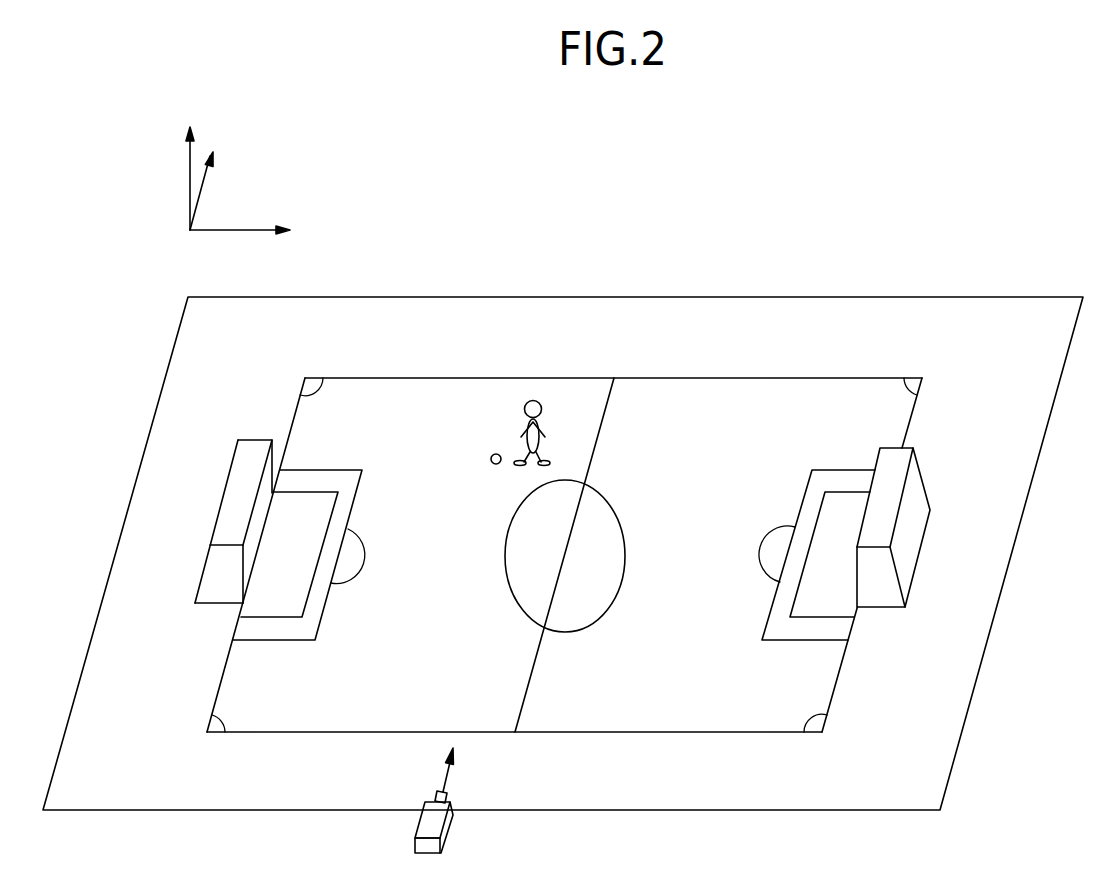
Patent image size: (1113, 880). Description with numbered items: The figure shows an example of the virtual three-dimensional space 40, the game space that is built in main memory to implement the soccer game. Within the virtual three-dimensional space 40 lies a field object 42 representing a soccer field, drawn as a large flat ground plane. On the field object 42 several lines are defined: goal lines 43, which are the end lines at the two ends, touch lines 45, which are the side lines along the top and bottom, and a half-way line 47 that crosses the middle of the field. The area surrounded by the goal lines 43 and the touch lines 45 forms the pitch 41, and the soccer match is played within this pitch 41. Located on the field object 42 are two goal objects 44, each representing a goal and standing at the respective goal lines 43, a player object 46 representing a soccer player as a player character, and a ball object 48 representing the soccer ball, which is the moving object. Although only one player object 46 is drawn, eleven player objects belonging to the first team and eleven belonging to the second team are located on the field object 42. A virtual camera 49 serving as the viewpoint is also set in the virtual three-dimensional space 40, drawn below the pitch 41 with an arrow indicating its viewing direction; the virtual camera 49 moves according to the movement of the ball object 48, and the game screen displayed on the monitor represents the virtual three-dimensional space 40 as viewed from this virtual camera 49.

The virtual three-dimensional space 40 is at (525, 187).
The pitch 41 is at (594, 722).
The field object 42 is at (782, 312).
The goal lines 43 is at (220, 673).
The goal objects 44 is at (200, 575).
The touch lines 45 is at (870, 378).
The player object 46 is at (533, 400).
The half-way line 47 is at (605, 426).
The ball object 48 is at (489, 459).
The virtual camera 49 is at (452, 825).